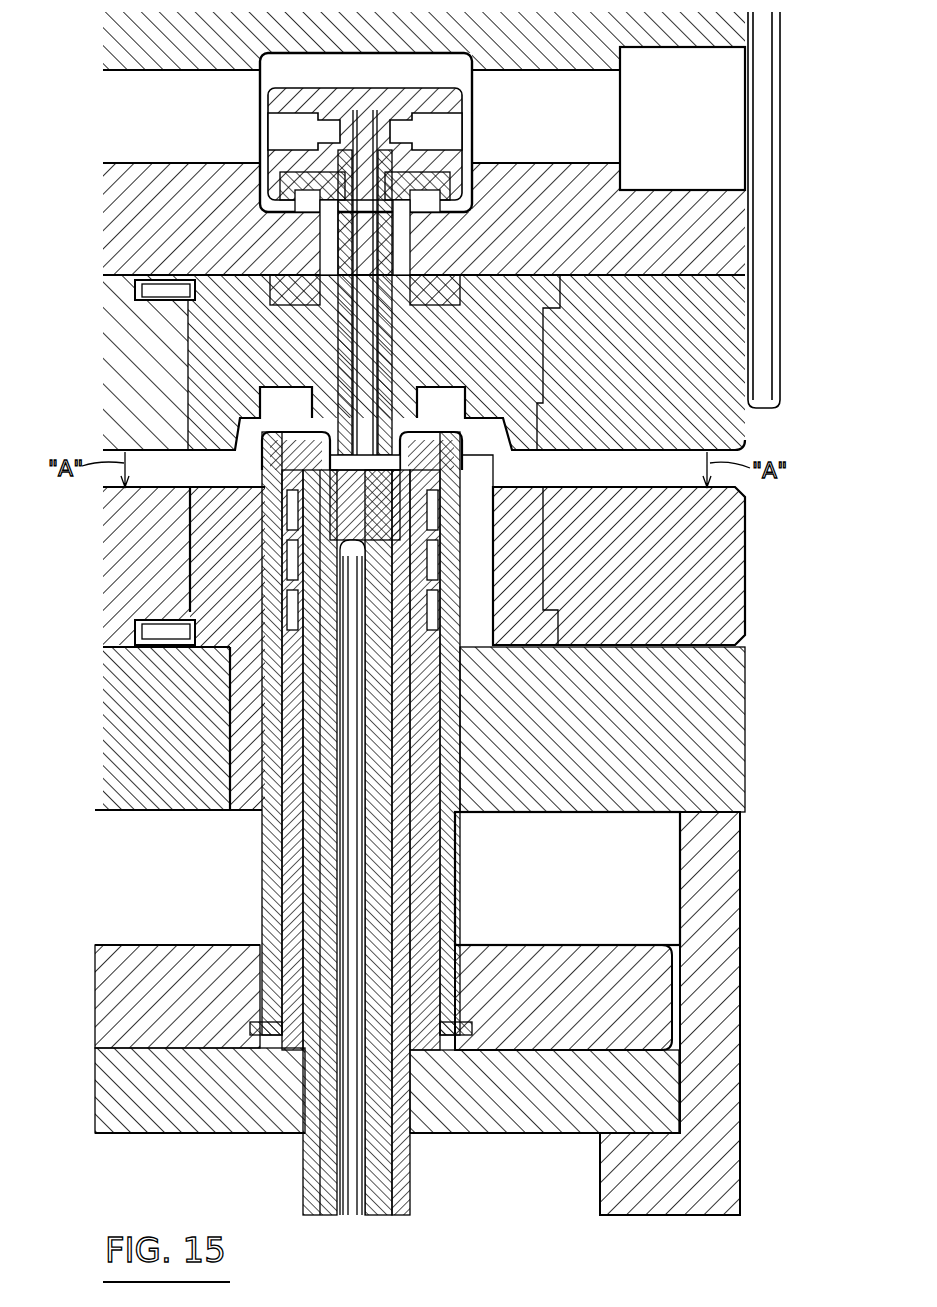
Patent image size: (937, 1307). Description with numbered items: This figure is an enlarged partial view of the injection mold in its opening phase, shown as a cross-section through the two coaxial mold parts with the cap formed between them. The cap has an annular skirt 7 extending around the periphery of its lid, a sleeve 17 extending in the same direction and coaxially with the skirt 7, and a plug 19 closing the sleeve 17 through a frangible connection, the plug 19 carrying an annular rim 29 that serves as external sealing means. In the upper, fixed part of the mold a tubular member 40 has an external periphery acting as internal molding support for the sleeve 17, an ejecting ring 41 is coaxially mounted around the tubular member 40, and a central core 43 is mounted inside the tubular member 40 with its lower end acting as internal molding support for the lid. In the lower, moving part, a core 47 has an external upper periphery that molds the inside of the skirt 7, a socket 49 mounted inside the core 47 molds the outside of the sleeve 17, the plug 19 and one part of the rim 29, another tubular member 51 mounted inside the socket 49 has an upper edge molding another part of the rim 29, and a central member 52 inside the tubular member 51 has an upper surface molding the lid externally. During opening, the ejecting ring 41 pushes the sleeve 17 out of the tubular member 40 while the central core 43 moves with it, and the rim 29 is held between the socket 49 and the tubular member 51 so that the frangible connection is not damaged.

The annular skirt 7 is at (262, 487).
The sleeve 17 is at (470, 478).
The plug 19 is at (470, 512).
The rim 29 is at (460, 527).
The tubular member 40 is at (410, 345).
The ejecting ring 41 is at (410, 378).
The central core 43 is at (385, 245).
The core 47 is at (272, 905).
The socket 49 is at (304, 428).
The tubular member 51 is at (330, 826).
The central member 52 is at (336, 870).